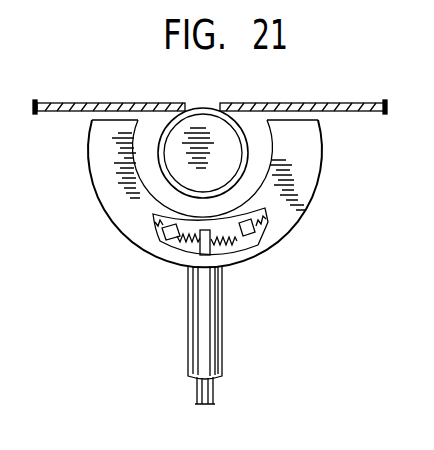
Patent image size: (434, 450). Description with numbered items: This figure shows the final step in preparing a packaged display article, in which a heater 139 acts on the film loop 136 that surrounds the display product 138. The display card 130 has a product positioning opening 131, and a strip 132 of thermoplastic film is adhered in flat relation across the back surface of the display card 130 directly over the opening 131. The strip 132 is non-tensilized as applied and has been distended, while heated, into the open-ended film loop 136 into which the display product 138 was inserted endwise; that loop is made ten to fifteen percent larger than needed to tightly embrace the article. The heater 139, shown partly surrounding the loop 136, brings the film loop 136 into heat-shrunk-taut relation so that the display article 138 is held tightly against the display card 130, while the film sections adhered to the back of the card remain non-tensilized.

The display card 130 is at (53, 112).
The product positioning opening 131 is at (218, 107).
The strip of thermoplastic film 132 is at (340, 102).
The film loop 136 is at (250, 158).
The display product 138 is at (200, 118).
The heater 139 is at (117, 198).